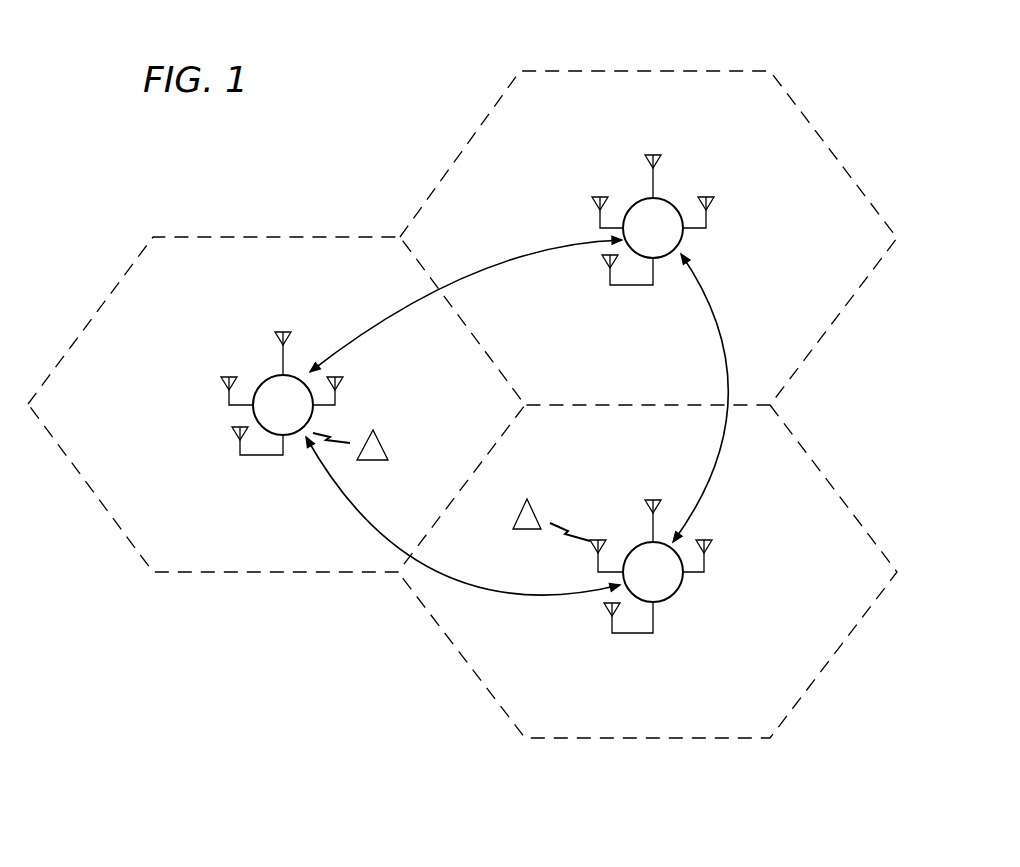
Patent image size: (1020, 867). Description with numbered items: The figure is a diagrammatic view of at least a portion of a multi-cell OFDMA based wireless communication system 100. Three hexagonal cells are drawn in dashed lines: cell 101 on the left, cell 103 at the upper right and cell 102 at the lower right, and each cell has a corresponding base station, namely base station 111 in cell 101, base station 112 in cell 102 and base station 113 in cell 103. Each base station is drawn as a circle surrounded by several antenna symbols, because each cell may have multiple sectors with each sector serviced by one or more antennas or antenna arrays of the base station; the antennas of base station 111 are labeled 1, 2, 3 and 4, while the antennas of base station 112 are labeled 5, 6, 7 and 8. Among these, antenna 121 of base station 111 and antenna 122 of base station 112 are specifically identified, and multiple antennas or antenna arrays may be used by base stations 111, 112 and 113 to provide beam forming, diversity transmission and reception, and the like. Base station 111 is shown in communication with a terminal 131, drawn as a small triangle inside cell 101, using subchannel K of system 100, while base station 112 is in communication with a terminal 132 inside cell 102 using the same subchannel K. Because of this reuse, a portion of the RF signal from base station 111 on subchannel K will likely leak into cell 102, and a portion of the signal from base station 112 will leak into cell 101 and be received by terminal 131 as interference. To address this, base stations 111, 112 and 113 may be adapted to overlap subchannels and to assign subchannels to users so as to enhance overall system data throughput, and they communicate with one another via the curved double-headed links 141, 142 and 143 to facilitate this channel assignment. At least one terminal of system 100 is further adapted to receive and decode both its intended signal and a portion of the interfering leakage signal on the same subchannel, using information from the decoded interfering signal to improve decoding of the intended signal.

The multi-cell OFDMA based wireless communication system 100 is at (355, 132).
The cell 101 is at (215, 235).
The cell 102 is at (670, 740).
The cell 103 is at (670, 70).
The base station 111 is at (263, 381).
The base station 112 is at (671, 596).
The base station 113 is at (669, 202).
The antenna 121 is at (232, 433).
The antenna 122 is at (590, 552).
The terminal 131 is at (380, 441).
The terminal 132 is at (536, 514).
The link 141 is at (478, 268).
The link 142 is at (352, 507).
The link 143 is at (720, 452).
The antenna 1 of BTS1 1 is at (283, 340).
The antenna 2 of BTS1 2 is at (334, 391).
The antenna 3 of BTS1 3 is at (257, 454).
The antenna 4 of BTS1 4 is at (230, 391).
The antenna 5 of BTS2 5 is at (653, 508).
The antenna 6 of BTS2 6 is at (697, 569).
The antenna 7 of BTS2 7 is at (628, 630).
The antenna 8 of BTS2 8 is at (606, 544).